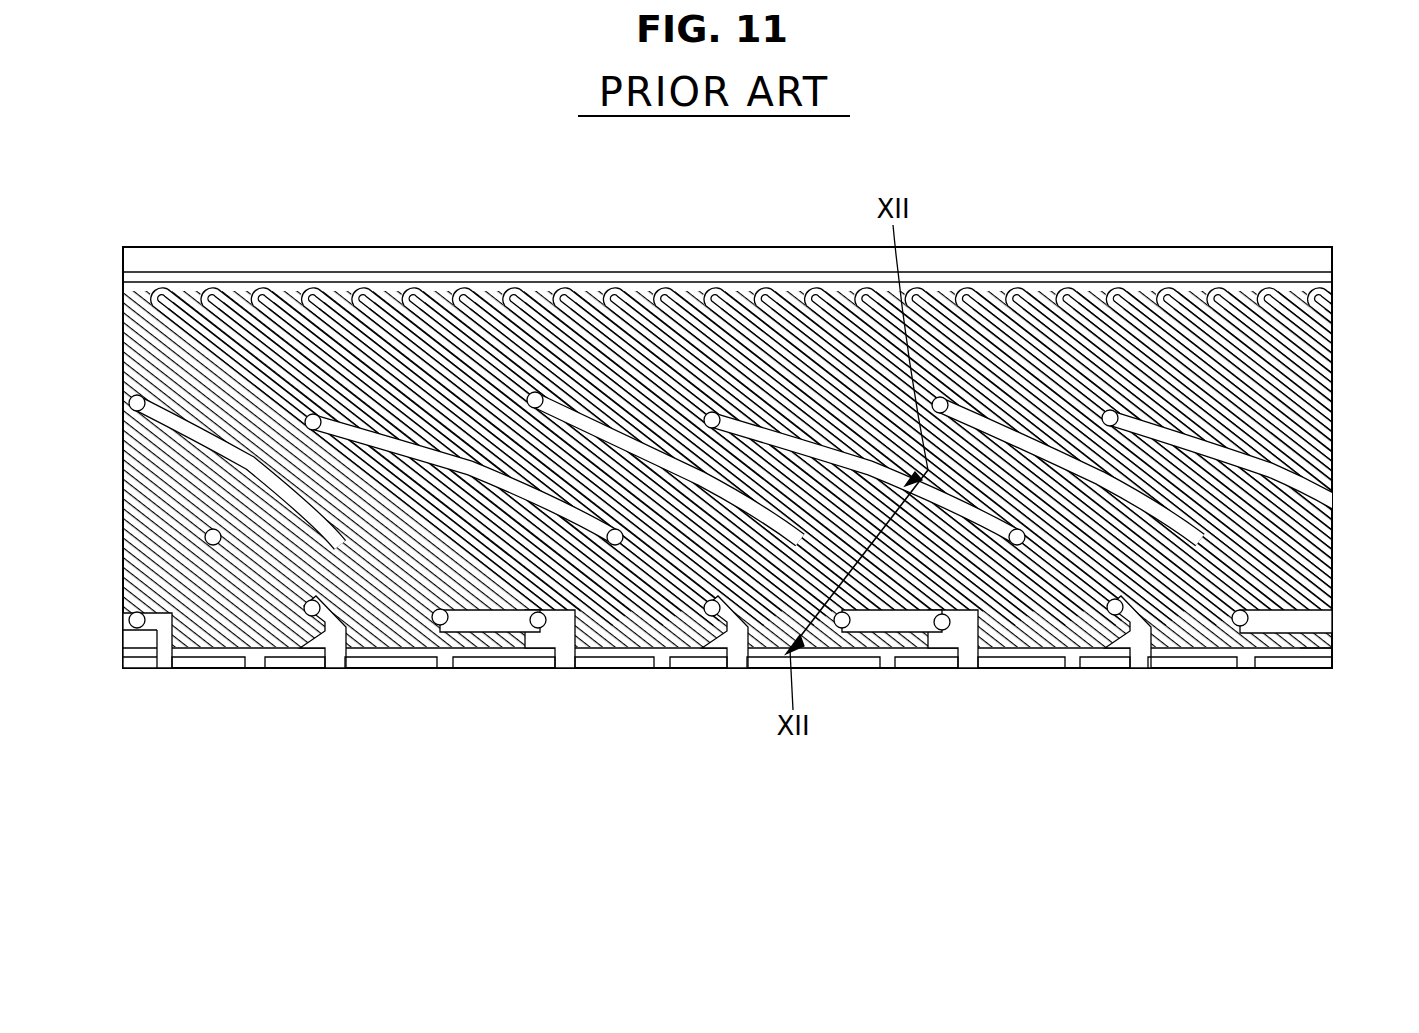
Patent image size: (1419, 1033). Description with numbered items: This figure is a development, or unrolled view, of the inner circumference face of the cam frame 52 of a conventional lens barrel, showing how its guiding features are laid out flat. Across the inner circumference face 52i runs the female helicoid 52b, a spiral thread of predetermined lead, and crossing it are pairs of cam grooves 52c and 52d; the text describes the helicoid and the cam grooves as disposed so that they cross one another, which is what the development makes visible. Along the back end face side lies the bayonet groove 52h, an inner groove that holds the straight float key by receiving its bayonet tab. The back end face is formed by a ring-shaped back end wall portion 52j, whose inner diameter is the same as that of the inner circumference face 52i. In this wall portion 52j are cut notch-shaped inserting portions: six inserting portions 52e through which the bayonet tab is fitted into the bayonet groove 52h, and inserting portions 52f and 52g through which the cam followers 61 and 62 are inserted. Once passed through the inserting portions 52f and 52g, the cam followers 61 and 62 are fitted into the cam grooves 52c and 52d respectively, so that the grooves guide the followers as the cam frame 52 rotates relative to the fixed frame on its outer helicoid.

The cam frame 52 is at (1272, 250).
The female helicoid 52b is at (1078, 290).
The cam groove 52c is at (353, 440).
The cam groove 52d is at (215, 455).
The inserting portion 52e is at (255, 670).
The inserting portion 52f is at (340, 670).
The inserting portion 52g is at (160, 670).
The bayonet groove 52h is at (1295, 670).
The inner circumference face 52i is at (1318, 645).
The back end wall portion 52j is at (1290, 670).
The cam follower 61 is at (712, 411).
The cam follower 62 is at (533, 392).